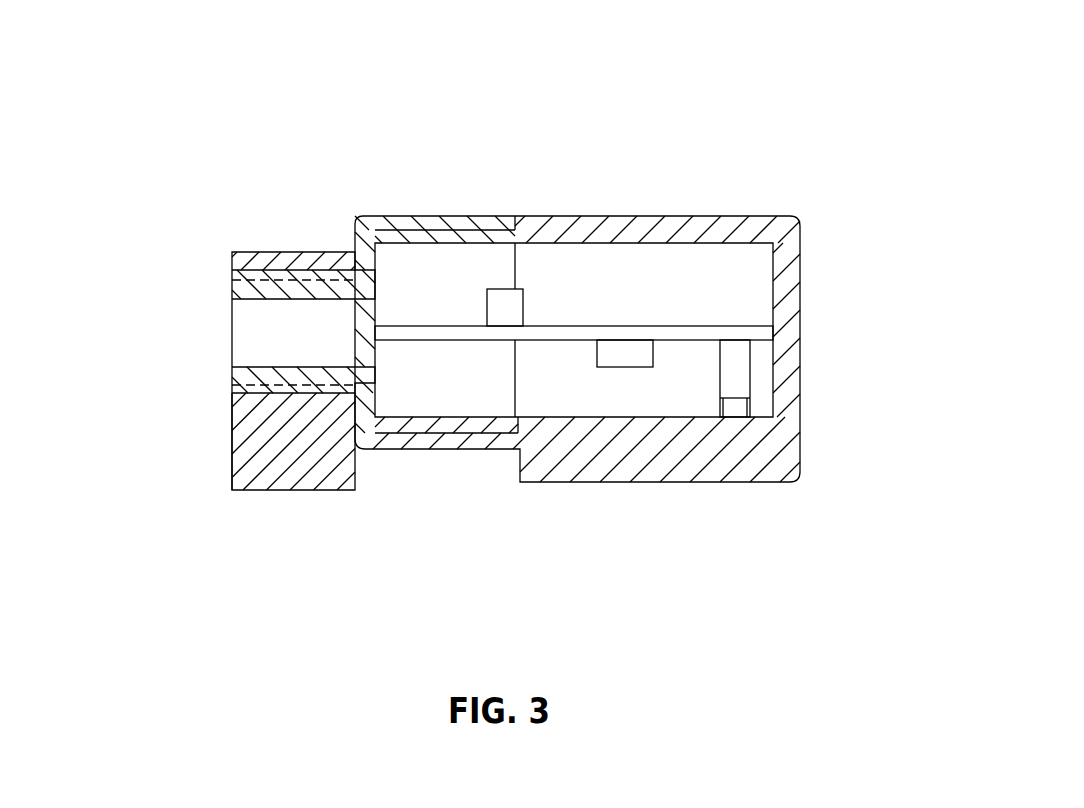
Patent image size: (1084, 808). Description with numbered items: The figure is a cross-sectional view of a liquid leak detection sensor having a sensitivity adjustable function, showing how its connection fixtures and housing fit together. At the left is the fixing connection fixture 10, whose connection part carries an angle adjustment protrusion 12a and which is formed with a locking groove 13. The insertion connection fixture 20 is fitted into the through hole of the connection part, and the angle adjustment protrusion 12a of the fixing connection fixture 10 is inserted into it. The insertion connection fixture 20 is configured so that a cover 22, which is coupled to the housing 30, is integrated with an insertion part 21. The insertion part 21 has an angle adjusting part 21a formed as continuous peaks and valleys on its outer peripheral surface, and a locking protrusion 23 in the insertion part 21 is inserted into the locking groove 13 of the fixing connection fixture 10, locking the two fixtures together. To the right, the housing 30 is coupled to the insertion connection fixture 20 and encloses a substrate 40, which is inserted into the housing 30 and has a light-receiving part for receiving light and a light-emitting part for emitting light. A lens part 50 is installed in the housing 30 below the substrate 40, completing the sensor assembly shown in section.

The fixing connection fixture 10 is at (222, 475).
The angle adjustment protrusion 12a is at (232, 277).
The locking groove 13 is at (360, 433).
The insertion connection fixture 20 is at (478, 206).
The insertion part 21 is at (232, 373).
The angle adjusting part 21a is at (233, 393).
The cover 22 is at (425, 228).
The locking protrusion 23 is at (316, 270).
The housing 30 is at (697, 206).
The substrate 40 is at (767, 333).
The lens part 50 is at (652, 470).